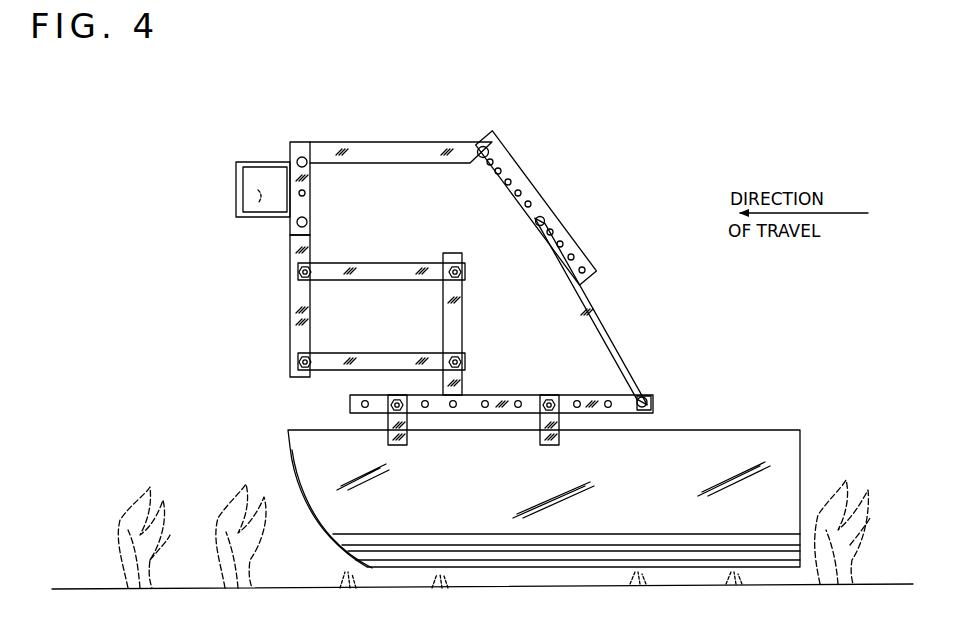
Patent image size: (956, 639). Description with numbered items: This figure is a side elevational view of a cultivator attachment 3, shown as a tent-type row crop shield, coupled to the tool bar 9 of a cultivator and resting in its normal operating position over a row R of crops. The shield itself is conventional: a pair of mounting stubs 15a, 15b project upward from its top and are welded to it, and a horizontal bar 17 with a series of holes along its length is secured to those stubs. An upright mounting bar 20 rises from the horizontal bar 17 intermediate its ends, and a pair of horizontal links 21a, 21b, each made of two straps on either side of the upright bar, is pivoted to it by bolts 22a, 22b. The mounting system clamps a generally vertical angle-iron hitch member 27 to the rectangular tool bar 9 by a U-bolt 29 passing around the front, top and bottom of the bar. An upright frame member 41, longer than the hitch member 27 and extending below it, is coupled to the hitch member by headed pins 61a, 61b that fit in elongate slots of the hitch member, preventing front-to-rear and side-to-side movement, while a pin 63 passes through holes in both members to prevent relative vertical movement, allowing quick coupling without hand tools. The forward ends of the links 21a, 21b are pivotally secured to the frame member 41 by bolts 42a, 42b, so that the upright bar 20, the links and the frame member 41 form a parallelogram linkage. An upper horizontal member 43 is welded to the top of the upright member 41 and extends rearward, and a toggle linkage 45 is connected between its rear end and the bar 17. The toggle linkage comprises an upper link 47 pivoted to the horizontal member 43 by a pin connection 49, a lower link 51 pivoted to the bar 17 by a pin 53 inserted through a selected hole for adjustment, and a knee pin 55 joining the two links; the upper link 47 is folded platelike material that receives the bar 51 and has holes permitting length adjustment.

The cultivator attachment 3 is at (802, 397).
The tool bar 9 is at (250, 205).
The mounting stub 15a is at (405, 442).
The mounting stub 15b is at (560, 440).
The horizontal bar 17 is at (487, 408).
The upright mounting bar 20 is at (465, 318).
The horizontal link 21a is at (348, 352).
The horizontal link 21b is at (392, 262).
The pivot bolt 22a is at (465, 362).
The pivot bolt 22b is at (462, 272).
The hitch member 27 is at (296, 139).
The U-bolt 29 is at (240, 165).
The upright frame member 41 is at (285, 318).
The bolt 42a is at (298, 362).
The bolt 42b is at (298, 272).
The upper horizontal member 43 is at (430, 142).
The toggle linkage 45 is at (638, 227).
The upper link 47 is at (523, 187).
The pin or bolt connection 49 is at (492, 147).
The lower link 51 is at (595, 307).
The pin or bolt connection 53 is at (642, 395).
The pin 55 is at (548, 217).
The headed pin 61a is at (303, 154).
The headed pin 61b is at (313, 222).
The pin 63 is at (307, 193).
The row of crops R is at (130, 508).